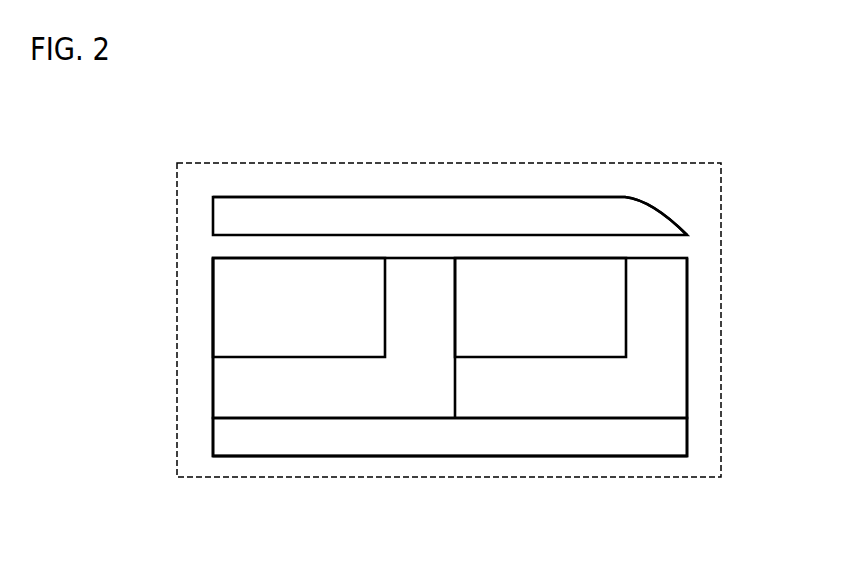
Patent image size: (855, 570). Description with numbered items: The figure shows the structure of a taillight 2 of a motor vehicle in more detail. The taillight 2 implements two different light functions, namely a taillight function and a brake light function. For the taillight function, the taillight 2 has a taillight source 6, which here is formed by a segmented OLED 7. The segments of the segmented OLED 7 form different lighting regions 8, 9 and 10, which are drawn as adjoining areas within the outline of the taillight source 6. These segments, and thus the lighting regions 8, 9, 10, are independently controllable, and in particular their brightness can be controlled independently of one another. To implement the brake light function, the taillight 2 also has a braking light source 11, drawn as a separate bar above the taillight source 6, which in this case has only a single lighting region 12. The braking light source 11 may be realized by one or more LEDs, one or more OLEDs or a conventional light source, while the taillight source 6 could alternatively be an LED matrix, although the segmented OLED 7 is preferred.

The taillight 2 is at (722, 183).
The taillight source 6 is at (700, 396).
The segmented OLED 7 is at (623, 457).
The lighting region 8 is at (345, 437).
The lighting region 9 is at (233, 398).
The lighting region 10 is at (242, 298).
The braking light source 11 is at (412, 196).
The lighting region 12 is at (278, 205).